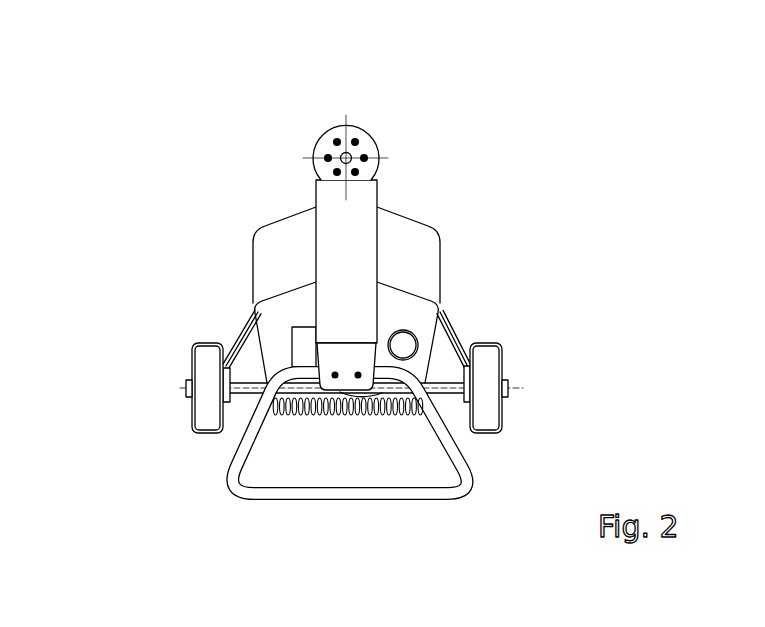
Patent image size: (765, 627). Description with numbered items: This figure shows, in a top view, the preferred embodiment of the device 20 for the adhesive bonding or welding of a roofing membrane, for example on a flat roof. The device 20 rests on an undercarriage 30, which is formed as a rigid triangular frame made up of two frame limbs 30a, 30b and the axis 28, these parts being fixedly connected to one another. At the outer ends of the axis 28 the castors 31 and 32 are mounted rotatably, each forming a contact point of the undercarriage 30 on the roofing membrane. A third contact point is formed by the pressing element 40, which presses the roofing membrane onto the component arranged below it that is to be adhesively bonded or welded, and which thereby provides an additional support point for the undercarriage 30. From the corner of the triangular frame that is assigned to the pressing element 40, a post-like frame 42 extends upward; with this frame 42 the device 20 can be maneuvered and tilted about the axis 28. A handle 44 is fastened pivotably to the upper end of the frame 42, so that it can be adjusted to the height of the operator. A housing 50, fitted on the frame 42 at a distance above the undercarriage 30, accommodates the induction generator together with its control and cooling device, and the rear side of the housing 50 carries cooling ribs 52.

The device 20 is at (460, 215).
The axis 28 is at (450, 390).
The undercarriage 30 is at (462, 333).
The frame limb 30a is at (237, 333).
The frame limb 30b is at (443, 323).
The castor 31 is at (190, 357).
The castor 32 is at (505, 355).
The pressing element 40 is at (372, 133).
The post-like frame 42 is at (357, 200).
The handle 44 is at (388, 502).
The housing 50 is at (263, 252).
The cooling ribs 52 is at (322, 417).